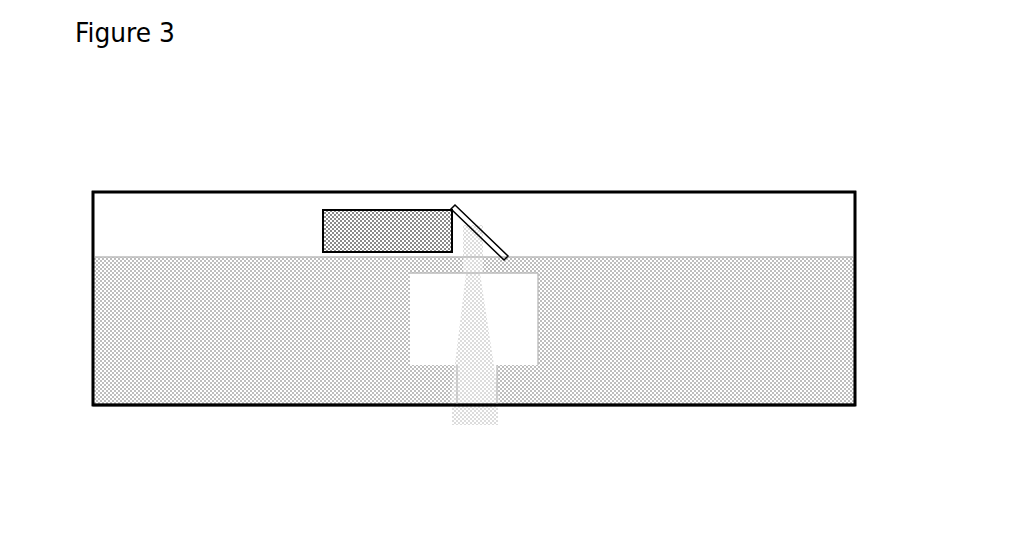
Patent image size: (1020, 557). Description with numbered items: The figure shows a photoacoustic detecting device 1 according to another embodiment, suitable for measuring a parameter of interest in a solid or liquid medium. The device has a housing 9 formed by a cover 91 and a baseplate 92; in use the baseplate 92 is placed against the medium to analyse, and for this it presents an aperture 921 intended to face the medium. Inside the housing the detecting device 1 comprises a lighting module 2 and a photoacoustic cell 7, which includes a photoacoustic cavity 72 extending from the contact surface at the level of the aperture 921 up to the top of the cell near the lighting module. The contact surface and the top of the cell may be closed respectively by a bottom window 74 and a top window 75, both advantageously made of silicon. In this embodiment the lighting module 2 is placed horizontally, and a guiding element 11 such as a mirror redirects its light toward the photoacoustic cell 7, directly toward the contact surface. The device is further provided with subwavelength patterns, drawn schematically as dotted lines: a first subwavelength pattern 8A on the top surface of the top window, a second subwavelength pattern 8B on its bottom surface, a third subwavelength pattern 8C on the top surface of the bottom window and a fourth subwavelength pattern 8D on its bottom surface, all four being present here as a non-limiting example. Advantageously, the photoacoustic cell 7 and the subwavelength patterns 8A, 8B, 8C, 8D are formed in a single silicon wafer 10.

The photoacoustic detecting device 1 is at (880, 137).
The lighting module 2 is at (369, 210).
The photoacoustic cell 7 is at (388, 353).
The first subwavelength pattern 8A is at (533, 257).
The second subwavelength pattern 8B is at (538, 272).
The third subwavelength pattern 8C is at (490, 402).
The fourth subwavelength pattern 8D is at (458, 403).
The housing 9 is at (165, 190).
The silicon wafer 10 is at (157, 367).
The guiding element 11 is at (463, 207).
The photoacoustic cavity 72 is at (530, 353).
The bottom window 74 is at (487, 402).
The top window 75 is at (518, 260).
The cover 91 is at (92, 232).
The baseplate 92 is at (92, 353).
The aperture 921 is at (477, 405).